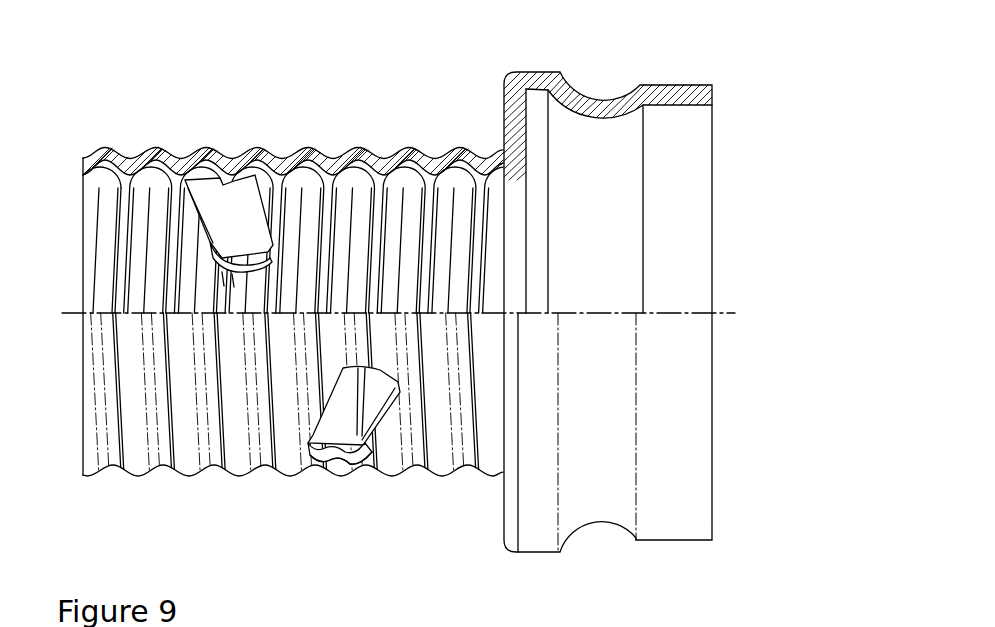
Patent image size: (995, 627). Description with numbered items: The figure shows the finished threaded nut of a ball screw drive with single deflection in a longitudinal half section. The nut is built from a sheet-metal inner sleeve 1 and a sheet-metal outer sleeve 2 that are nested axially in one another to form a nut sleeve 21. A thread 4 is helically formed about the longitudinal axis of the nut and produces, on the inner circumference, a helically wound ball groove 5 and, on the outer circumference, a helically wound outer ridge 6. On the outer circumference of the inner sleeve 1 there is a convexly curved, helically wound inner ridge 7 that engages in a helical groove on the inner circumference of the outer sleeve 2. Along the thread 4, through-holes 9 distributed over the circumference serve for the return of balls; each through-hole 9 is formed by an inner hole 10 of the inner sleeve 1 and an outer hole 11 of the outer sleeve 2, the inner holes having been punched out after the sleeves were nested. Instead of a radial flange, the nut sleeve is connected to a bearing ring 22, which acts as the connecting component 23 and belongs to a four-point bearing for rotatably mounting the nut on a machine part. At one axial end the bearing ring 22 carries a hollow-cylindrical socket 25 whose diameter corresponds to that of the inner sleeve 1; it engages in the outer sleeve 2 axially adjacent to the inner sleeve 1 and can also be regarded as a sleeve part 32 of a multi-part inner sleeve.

The inner sleeve 1 is at (268, 172).
The outer sleeve 2 is at (212, 152).
The thread 4 is at (103, 275).
The ball groove 5 is at (108, 222).
The outer ridge 6 is at (109, 147).
The inner ridge 7 is at (412, 158).
The through-hole 9 is at (345, 415).
The inner hole 10 is at (313, 438).
The outer hole 11 is at (322, 457).
The nut sleeve 21 is at (684, 280).
The bearing ring 22 is at (666, 63).
The connecting component 23 is at (681, 85).
The hollow-cylindrical socket 25 is at (638, 224).
The sleeve part 32 is at (450, 197).